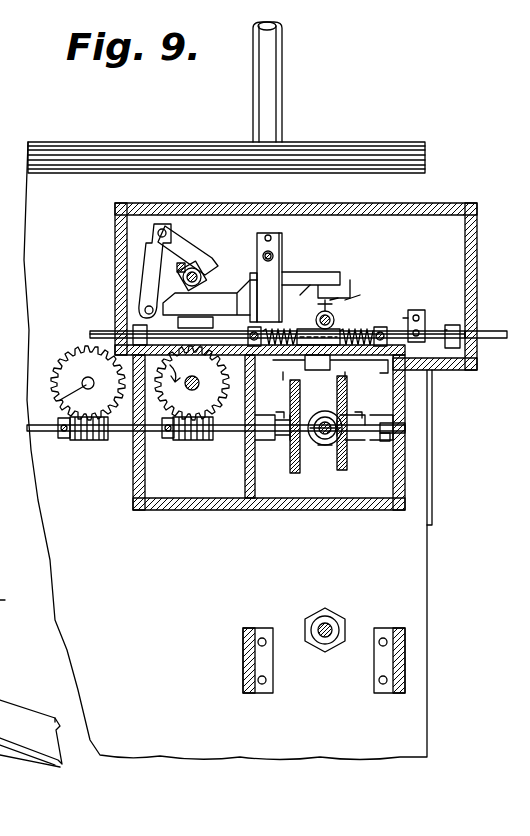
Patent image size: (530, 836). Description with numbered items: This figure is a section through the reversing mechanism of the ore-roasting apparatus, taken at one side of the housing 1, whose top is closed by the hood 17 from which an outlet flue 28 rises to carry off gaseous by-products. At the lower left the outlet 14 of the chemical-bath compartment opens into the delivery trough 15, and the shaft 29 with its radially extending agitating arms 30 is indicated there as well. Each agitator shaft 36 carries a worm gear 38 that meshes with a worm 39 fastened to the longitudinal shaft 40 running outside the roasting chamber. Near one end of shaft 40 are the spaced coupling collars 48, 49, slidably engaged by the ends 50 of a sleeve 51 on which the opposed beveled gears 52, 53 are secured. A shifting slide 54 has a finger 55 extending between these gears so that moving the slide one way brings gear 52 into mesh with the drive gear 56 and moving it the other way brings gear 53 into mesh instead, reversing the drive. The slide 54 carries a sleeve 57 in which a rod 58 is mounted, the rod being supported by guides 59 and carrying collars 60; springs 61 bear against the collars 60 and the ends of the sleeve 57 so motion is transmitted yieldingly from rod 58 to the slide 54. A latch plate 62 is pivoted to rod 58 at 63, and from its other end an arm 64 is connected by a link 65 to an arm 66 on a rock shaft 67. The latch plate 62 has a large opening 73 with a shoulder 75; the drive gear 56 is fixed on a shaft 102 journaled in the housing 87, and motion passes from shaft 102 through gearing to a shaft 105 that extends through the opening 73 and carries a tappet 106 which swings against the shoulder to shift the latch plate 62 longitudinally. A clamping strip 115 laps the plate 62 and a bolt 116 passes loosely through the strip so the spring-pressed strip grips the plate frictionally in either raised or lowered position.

The housing 1 is at (400, 721).
The outlet 14 is at (27, 685).
The delivery trough 15 is at (24, 716).
The hood 17 is at (52, 150).
The outlet flue 28 is at (272, 75).
The shaft 29 is at (323, 640).
The agitating arms 30 is at (15, 590).
The agitator shaft 36 is at (215, 408).
The worm gear 38 is at (65, 360).
The worm 39 is at (92, 445).
The longitudinal shaft 40 is at (52, 436).
The coupling collar 48 is at (292, 450).
The coupling collar 49 is at (392, 437).
The sleeve ends 50 is at (267, 412).
The sleeve 51 is at (305, 498).
The beveled gear 52 is at (290, 498).
The beveled gear 53 is at (345, 498).
The shifting slide 54 is at (403, 318).
The finger 55 is at (322, 383).
The drive gear 56 is at (325, 500).
The sleeve 57 is at (320, 296).
The rod 58 is at (500, 332).
The guides 59 is at (130, 330).
The collars 60 is at (248, 298).
The springs 61 is at (290, 300).
The latch plate 62 is at (387, 210).
The pivotal connection 63 is at (453, 325).
The arm 64 is at (238, 288).
The link 65 is at (150, 272).
The arm 66 is at (181, 262).
The rock shaft 67 is at (200, 262).
The opening 73 is at (370, 328).
The shoulder 75 is at (328, 295).
The housing 87 is at (155, 512).
The shaft 102 is at (335, 436).
The shaft 105 is at (352, 307).
The tappet 106 is at (345, 305).
The clamping strip 115 is at (292, 215).
The bolt 116 is at (264, 215).